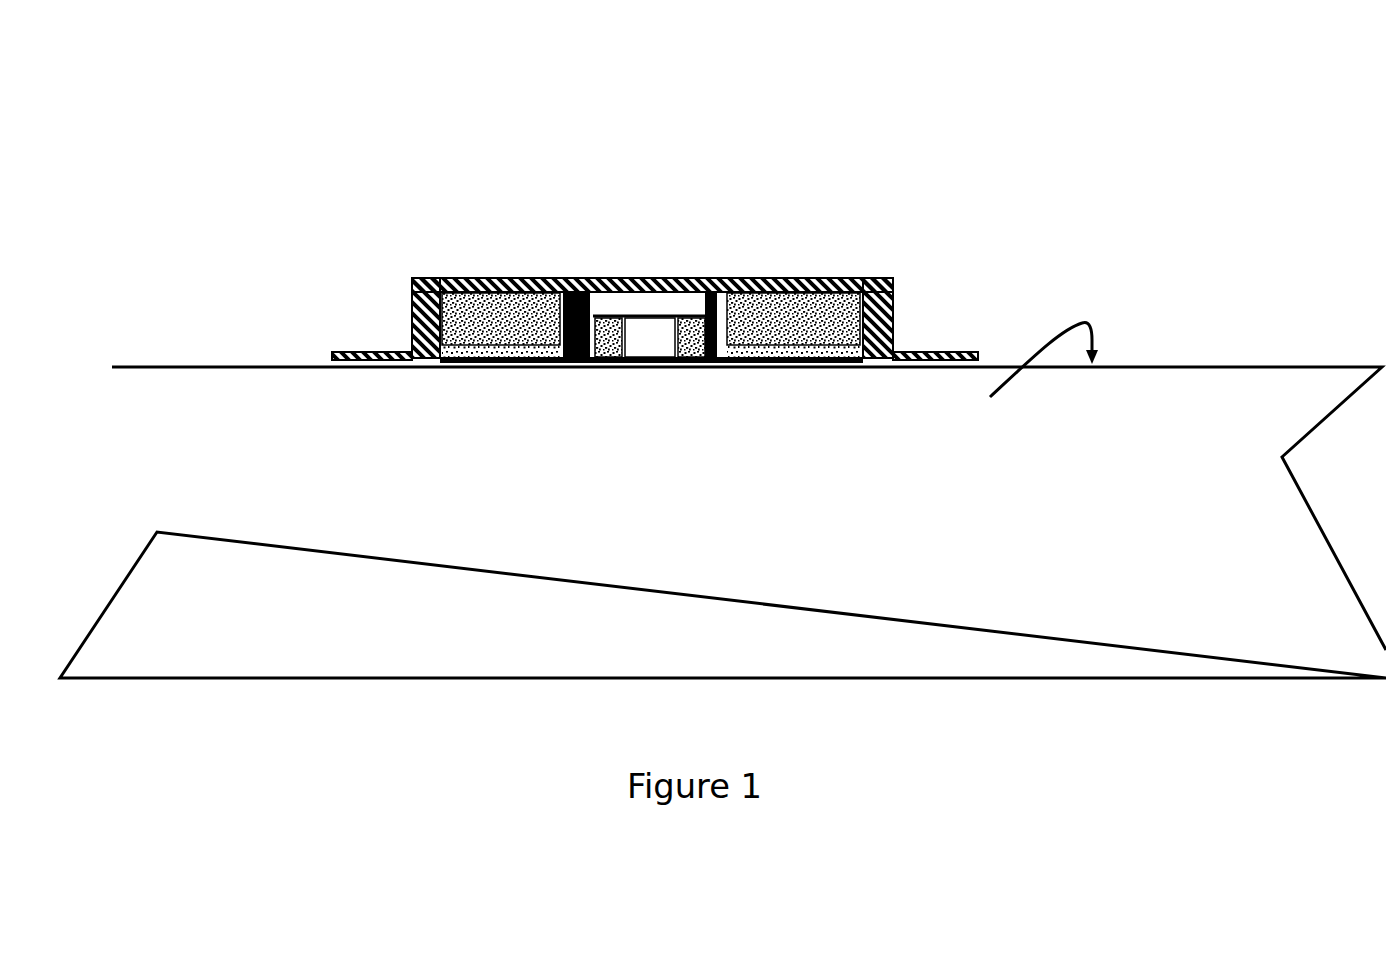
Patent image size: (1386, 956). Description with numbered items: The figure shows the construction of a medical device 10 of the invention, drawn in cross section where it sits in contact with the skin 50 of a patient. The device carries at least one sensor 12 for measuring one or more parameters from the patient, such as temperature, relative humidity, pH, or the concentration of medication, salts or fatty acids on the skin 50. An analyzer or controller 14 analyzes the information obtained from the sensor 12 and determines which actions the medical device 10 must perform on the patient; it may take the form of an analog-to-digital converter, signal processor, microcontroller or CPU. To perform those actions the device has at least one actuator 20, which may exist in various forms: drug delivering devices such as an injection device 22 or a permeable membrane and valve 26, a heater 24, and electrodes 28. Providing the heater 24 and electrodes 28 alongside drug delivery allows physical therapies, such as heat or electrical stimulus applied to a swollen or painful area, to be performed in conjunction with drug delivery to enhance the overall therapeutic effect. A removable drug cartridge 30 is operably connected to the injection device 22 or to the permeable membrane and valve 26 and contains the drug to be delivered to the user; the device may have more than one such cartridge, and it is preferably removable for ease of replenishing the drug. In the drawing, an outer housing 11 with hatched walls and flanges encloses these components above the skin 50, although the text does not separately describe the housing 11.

The medical device 10 is at (1238, 195).
The housing cap 11 is at (897, 300).
The sensor 12 is at (645, 330).
The controller 14 is at (692, 355).
The actuator 20 is at (470, 667).
The injection device 22 is at (602, 360).
The heater 24 is at (565, 360).
The permeable membrane and valve 26 is at (483, 360).
The electrodes 28 is at (740, 358).
The removable drug cartridge 30 is at (515, 317).
The skin 50 is at (1021, 379).